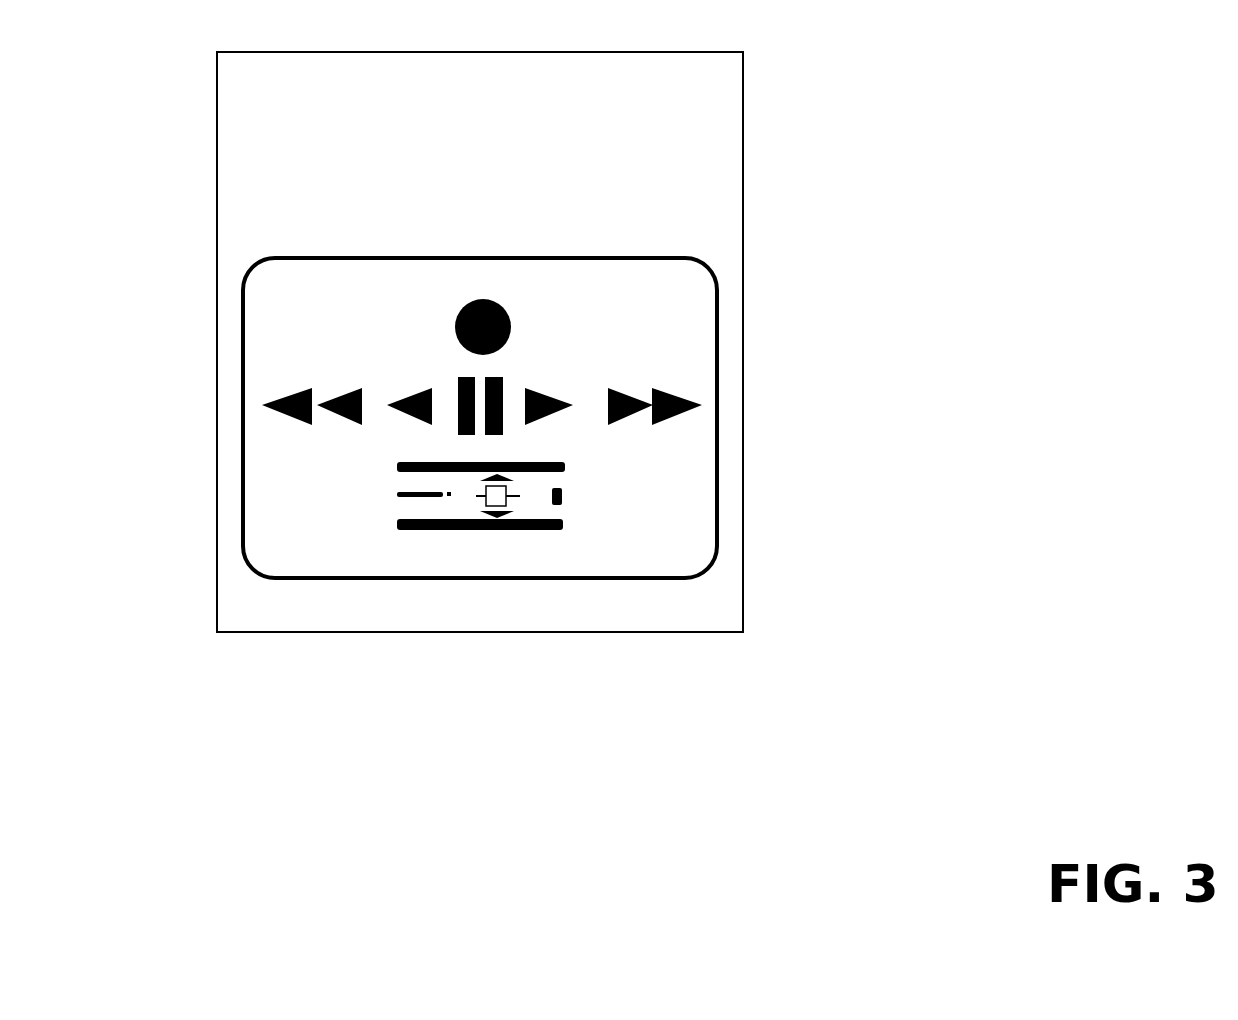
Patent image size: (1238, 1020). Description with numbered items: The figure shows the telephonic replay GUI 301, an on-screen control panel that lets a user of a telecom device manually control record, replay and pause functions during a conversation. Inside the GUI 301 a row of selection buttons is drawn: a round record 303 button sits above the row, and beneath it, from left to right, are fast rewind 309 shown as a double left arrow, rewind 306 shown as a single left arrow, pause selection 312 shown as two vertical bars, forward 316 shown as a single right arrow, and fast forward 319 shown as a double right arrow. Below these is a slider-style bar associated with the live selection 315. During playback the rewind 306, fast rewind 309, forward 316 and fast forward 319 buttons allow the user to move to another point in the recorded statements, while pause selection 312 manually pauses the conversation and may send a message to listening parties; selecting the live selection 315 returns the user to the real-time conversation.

The telephonic replay GUI 301 is at (447, 152).
The record 303 is at (484, 299).
The rewind 306 is at (420, 392).
The fast rewind 309 is at (292, 395).
The pause selection 312 is at (458, 432).
The live selection 315 is at (560, 512).
The forward 316 is at (540, 392).
The fast forward 319 is at (680, 392).